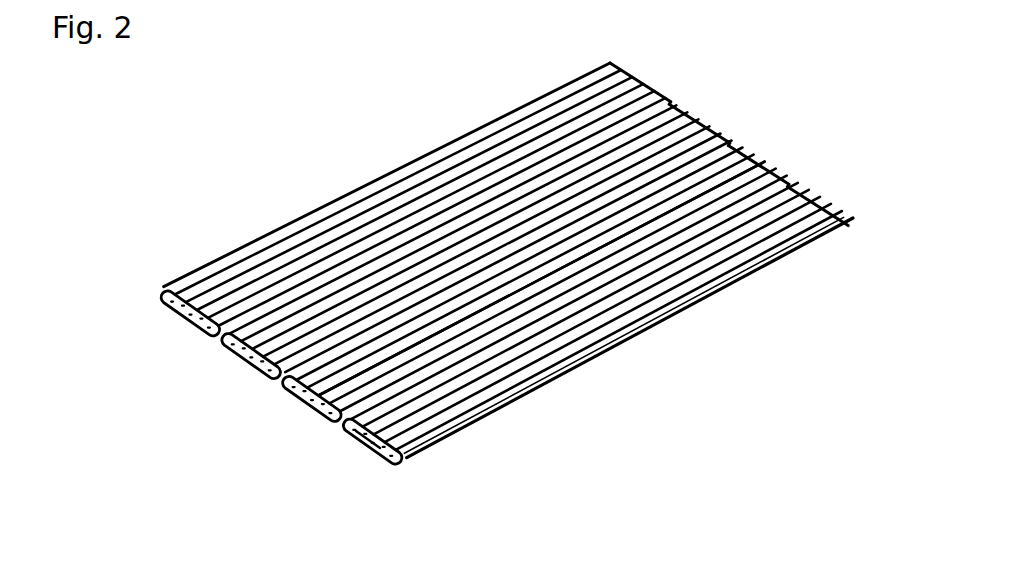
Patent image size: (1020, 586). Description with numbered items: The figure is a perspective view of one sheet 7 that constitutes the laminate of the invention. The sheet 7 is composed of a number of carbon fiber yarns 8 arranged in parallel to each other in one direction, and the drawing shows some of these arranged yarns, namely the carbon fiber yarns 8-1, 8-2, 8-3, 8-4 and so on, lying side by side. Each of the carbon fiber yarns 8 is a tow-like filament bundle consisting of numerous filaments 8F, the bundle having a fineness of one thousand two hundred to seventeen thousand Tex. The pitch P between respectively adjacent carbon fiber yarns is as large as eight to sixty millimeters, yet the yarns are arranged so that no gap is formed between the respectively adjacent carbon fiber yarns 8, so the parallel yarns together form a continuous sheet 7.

The carbon fiber yarns 8 is at (458, 292).
The carbon fiber yarn 8-1 is at (382, 458).
The carbon fiber yarn 8-2 is at (765, 155).
The carbon fiber yarn 8-3 is at (226, 346).
The carbon fiber yarn 8-4 is at (187, 318).
The filaments 8F is at (362, 441).
The sheet 7 is at (588, 343).
The pitch P is at (358, 440).